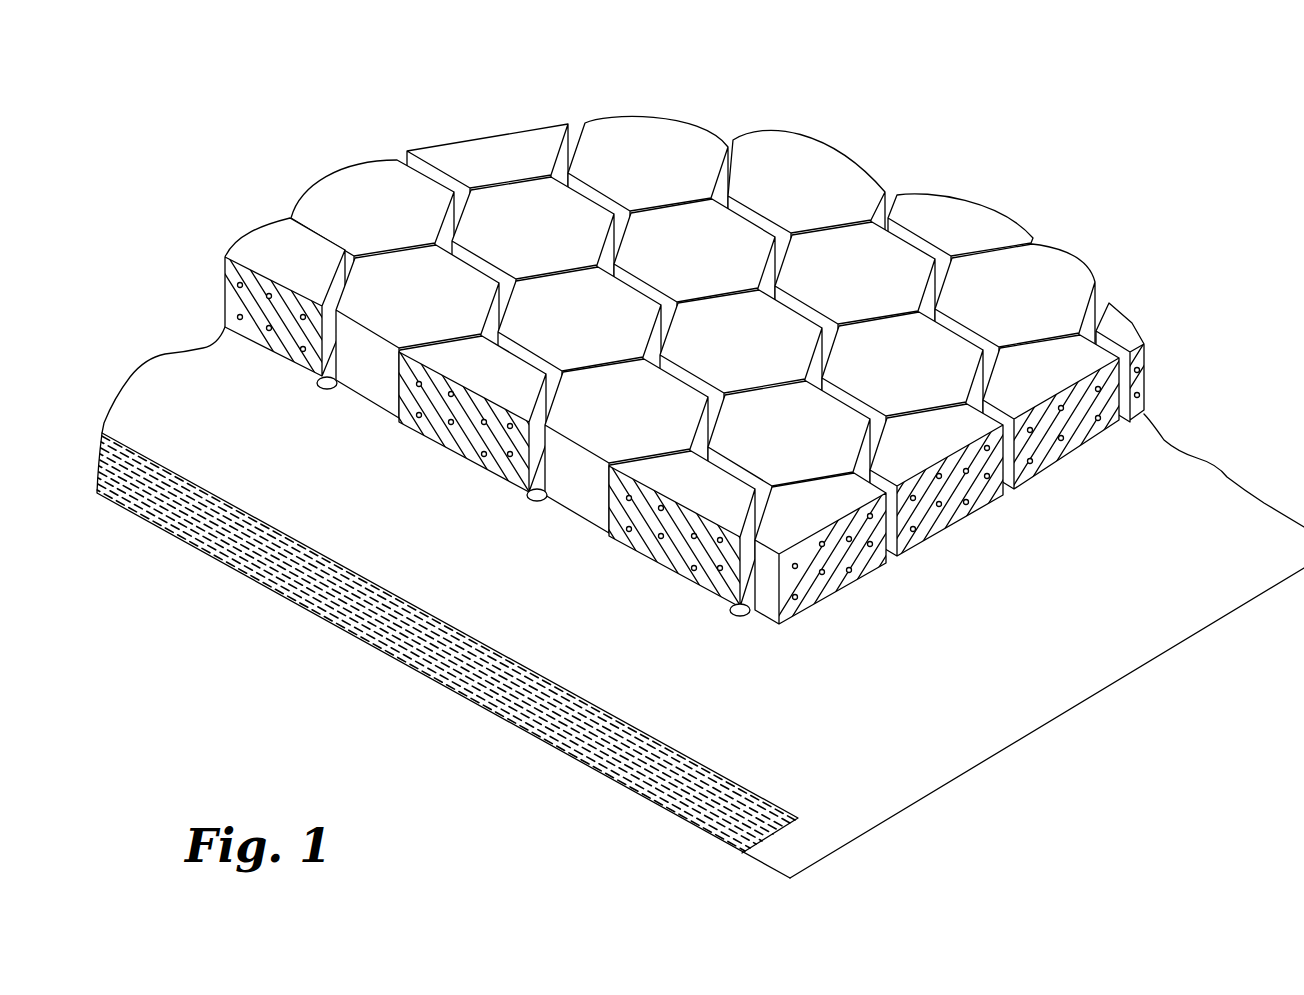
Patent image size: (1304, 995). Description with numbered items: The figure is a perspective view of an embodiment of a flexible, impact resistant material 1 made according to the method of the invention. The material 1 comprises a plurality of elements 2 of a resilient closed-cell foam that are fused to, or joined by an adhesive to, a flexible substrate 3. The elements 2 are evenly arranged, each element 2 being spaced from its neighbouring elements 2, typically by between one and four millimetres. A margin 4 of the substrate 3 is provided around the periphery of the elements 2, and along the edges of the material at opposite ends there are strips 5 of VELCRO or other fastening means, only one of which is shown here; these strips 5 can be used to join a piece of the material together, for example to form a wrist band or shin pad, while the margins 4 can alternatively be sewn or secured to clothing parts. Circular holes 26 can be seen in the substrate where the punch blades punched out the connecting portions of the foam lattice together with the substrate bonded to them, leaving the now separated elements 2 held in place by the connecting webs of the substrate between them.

The flexible, impact resistant material 1 is at (700, 455).
The elements 2 is at (348, 197).
The flexible substrate 3 is at (1055, 632).
The margin 4 is at (350, 513).
The strips 5 is at (418, 648).
The circular holes 26 is at (318, 389).